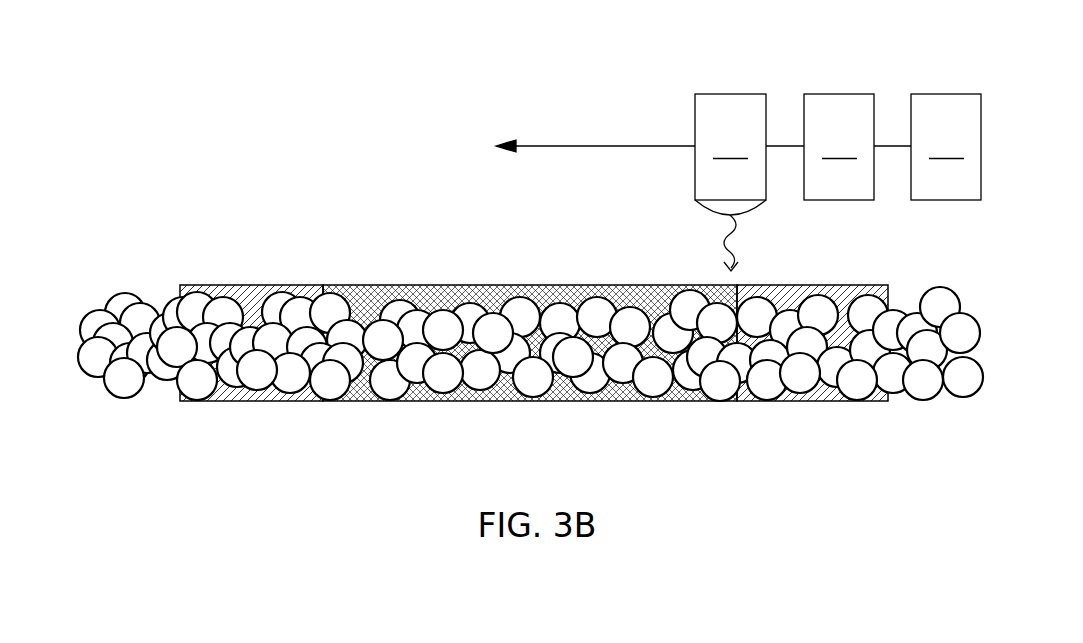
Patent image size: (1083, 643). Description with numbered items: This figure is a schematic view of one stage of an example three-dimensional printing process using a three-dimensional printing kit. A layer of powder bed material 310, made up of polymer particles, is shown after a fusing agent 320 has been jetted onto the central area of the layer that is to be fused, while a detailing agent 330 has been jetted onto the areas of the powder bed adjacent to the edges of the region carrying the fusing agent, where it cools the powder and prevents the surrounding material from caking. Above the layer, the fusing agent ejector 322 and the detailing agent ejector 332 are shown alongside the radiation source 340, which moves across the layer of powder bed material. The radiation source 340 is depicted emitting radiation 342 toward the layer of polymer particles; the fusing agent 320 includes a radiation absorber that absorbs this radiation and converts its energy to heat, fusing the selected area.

The powder bed material 310 is at (128, 302).
The fusing agent 320 is at (425, 300).
The detailing agent 330 is at (308, 292).
The radiation source 340 is at (729, 102).
The radiation 342 is at (726, 266).
The detailing agent ejector 332 is at (835, 102).
The fusing agent ejector 322 is at (938, 102).